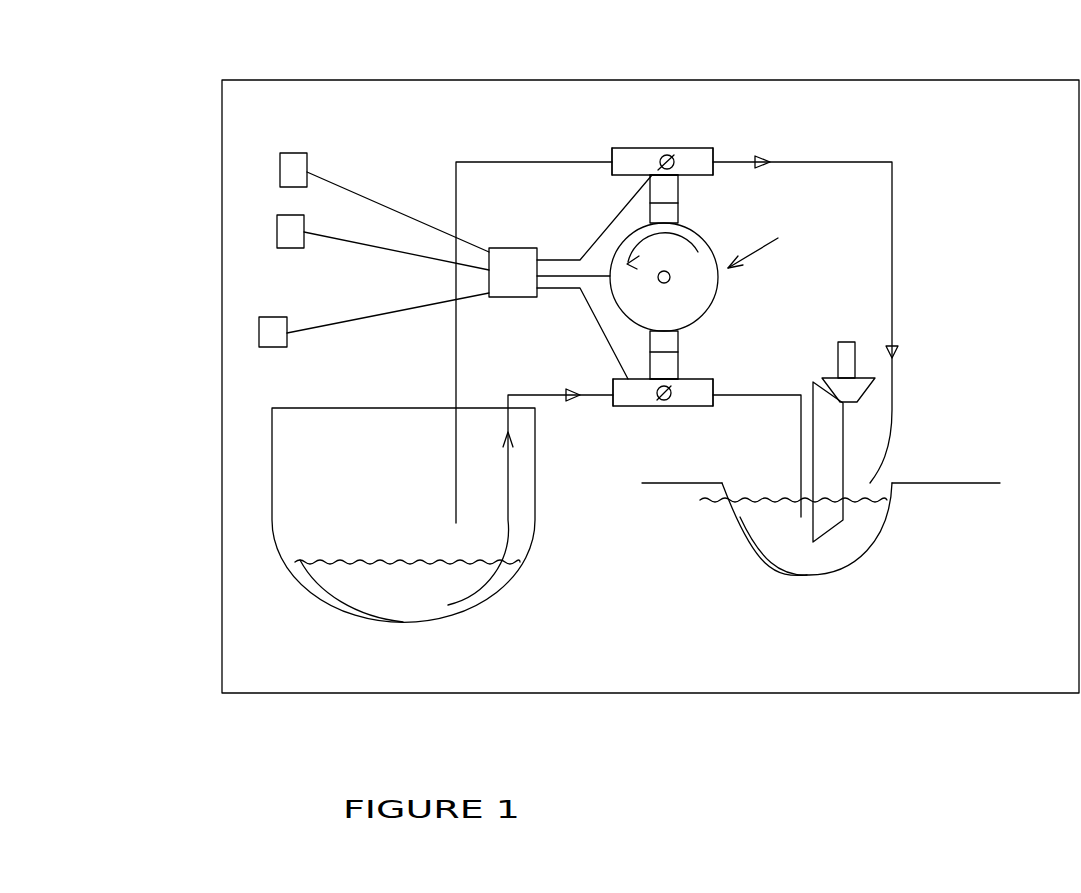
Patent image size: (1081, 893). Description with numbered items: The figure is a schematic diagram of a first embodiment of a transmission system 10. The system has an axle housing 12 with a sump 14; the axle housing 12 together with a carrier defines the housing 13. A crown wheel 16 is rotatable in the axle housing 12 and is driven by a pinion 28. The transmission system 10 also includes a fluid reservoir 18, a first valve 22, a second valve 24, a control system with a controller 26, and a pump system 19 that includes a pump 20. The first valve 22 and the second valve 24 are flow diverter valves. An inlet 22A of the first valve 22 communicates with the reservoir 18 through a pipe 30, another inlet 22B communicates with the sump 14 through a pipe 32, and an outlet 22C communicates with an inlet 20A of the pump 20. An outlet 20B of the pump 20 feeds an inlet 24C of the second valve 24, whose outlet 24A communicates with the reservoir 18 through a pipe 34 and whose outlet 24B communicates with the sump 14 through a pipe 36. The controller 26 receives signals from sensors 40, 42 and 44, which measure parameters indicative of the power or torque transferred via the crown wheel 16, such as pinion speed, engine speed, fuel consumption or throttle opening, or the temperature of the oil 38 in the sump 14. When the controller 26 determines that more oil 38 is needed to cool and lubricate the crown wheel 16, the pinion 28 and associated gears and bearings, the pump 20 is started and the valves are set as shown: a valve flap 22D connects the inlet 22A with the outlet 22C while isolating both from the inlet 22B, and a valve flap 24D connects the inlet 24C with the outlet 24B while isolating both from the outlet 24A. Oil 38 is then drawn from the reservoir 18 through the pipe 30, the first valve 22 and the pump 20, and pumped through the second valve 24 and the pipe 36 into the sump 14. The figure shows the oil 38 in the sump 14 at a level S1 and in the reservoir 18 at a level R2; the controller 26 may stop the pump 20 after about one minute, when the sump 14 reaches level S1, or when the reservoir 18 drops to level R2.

The transmission system 10 is at (673, 693).
The axle housing 12 is at (846, 547).
The housing 13 is at (980, 485).
The sump 14 is at (837, 562).
The crown wheel 16 is at (837, 447).
The fluid reservoir 18 is at (293, 538).
The pump system 19 is at (777, 248).
The pump 20 is at (711, 250).
The inlet of the pump 20A is at (678, 340).
The outlet of the pump 20B is at (677, 212).
The first valve 22 is at (686, 384).
The inlet of the first valve 22A is at (616, 404).
The inlet of the first valve 22B is at (713, 398).
The outlet of the first valve 22C is at (678, 365).
The valve flap 22D is at (667, 400).
The second valve 24 is at (687, 122).
The outlet of the second valve 24A is at (607, 158).
The outlet of the second valve 24B is at (712, 160).
The inlet of the second valve 24C is at (673, 188).
The valve flap 24D is at (667, 156).
The controller 26 is at (570, 277).
The pinion 28 is at (852, 342).
The pipe 30 is at (510, 483).
The pipe 32 is at (800, 445).
The pipe 34 is at (453, 273).
The pipe 36 is at (892, 220).
The oil 38 is at (367, 602).
The sensor 40 is at (280, 170).
The sensor 42 is at (277, 232).
The sensor 44 is at (259, 333).
The level S1 is at (700, 500).
The level R2 is at (522, 563).